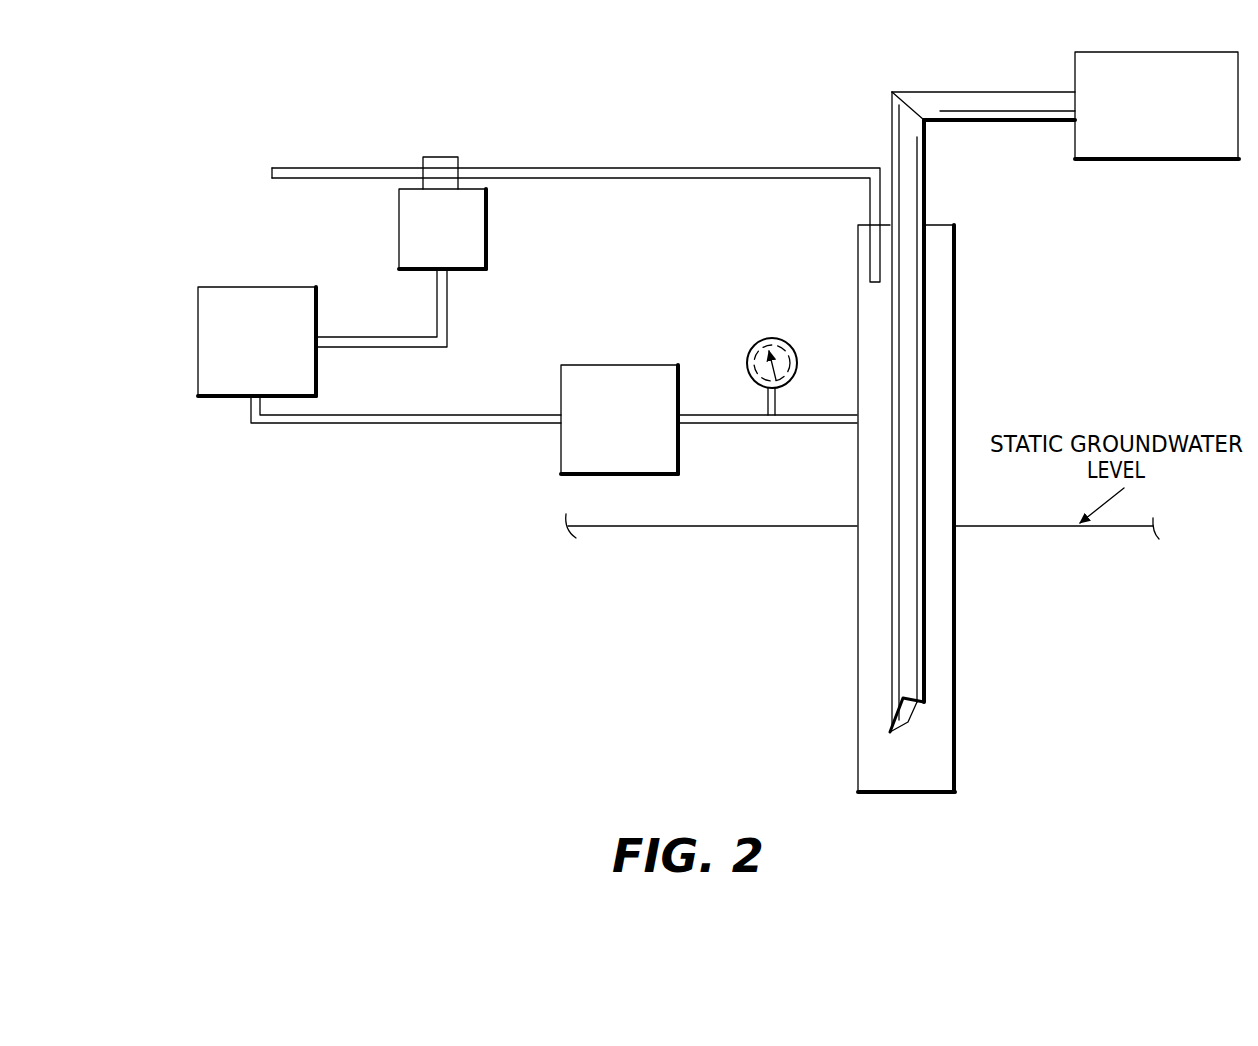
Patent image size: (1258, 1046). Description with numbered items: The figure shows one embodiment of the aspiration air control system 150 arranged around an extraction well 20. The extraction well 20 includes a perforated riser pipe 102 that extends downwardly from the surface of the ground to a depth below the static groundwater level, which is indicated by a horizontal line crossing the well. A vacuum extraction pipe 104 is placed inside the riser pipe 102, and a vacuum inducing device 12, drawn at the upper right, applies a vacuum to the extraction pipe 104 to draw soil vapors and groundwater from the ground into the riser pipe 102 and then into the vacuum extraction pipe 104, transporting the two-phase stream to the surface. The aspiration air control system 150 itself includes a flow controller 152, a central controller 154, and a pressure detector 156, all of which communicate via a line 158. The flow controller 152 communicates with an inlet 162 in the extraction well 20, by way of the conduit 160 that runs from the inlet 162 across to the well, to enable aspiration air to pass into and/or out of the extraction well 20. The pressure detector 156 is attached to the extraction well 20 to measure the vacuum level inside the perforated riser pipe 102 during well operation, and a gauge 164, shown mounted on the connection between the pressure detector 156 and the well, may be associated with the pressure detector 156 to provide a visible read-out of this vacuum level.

The aspiration air control system 150 is at (456, 80).
The extraction well 20 is at (1020, 358).
The perforated riser pipe 102 is at (950, 608).
The vacuum extraction pipe 104 is at (920, 188).
The vacuum inducing device 12 is at (1138, 152).
The line 160 is at (657, 167).
The inlet 162 is at (268, 172).
The flow controller 152 is at (486, 258).
The central controller 154 is at (263, 298).
The line 158 is at (385, 340).
The pressure detector 156 is at (628, 373).
The gauge 164 is at (774, 343).